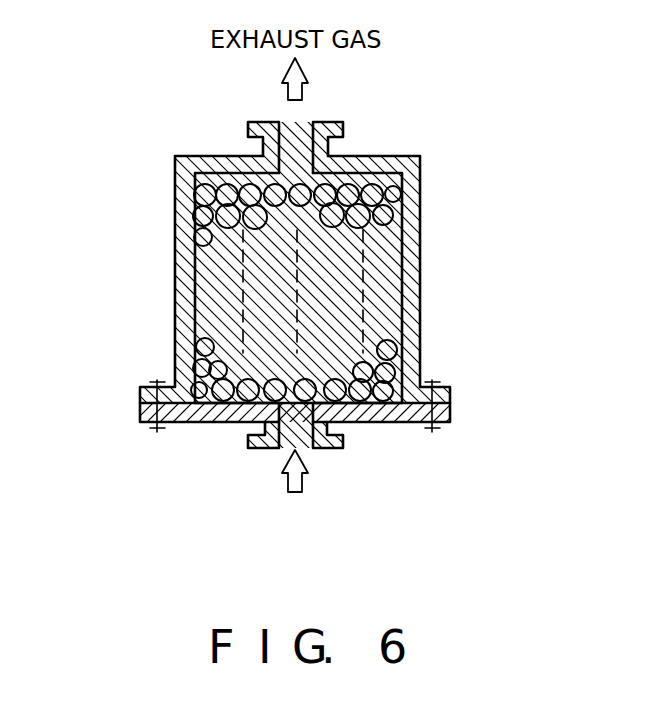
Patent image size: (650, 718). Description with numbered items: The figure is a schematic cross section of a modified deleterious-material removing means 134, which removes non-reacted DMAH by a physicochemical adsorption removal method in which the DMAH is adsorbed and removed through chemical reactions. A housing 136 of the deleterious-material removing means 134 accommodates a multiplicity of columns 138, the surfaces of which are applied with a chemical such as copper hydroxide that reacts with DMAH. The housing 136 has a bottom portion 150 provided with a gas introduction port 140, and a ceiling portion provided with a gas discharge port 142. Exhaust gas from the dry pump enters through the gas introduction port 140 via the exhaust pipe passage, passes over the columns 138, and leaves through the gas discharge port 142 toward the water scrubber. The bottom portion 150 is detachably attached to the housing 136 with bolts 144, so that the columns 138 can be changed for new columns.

The deleterious-material removing means 134 is at (518, 317).
The housing 136 is at (180, 288).
The columns 138 is at (387, 213).
The gas introduction port 140 is at (290, 432).
The gas discharge port 142 is at (298, 138).
The bolts 144 is at (154, 432).
The bottom portion 150 is at (388, 416).